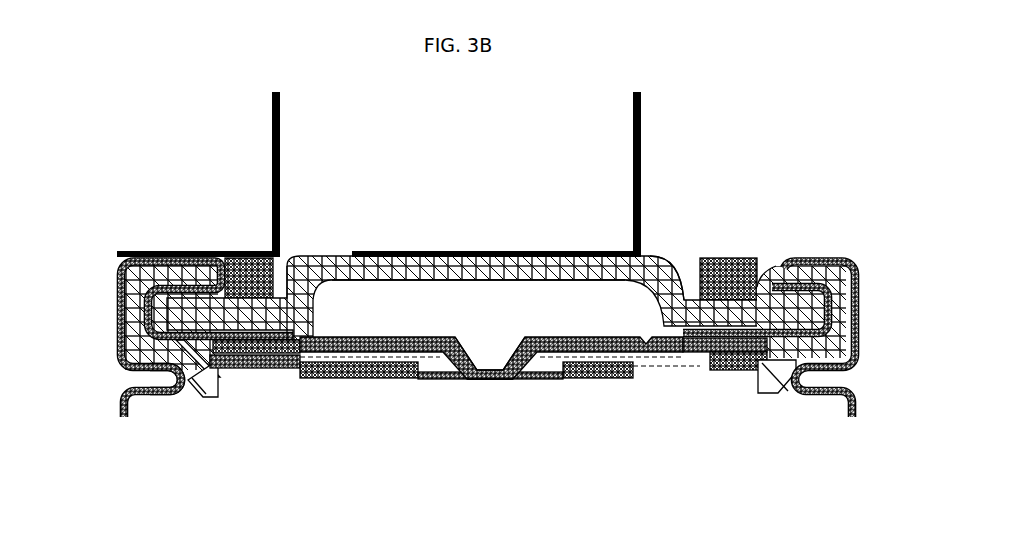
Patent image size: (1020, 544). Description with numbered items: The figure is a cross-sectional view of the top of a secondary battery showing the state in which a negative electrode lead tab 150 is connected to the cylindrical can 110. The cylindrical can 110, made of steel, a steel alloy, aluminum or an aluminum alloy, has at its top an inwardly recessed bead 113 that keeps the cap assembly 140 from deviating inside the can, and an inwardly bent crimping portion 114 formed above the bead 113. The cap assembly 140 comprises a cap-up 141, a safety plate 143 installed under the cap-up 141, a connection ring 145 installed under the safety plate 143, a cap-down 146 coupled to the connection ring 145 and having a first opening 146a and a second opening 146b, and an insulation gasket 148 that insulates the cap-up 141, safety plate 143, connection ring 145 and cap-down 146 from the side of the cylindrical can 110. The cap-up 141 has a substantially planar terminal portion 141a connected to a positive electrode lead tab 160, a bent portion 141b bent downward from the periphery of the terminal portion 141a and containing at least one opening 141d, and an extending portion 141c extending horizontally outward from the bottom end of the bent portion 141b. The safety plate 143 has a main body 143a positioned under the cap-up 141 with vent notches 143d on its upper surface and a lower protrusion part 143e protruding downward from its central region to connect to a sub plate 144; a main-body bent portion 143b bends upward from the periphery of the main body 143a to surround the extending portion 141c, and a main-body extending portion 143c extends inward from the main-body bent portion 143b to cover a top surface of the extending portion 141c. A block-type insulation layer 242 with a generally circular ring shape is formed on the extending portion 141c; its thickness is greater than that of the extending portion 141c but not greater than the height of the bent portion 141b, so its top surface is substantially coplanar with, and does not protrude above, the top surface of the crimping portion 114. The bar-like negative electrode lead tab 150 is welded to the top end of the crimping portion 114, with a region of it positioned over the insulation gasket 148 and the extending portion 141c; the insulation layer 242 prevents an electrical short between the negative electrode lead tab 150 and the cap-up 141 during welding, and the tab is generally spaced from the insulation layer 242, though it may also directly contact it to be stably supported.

The cylindrical can 110 is at (168, 372).
The bead 113 is at (146, 375).
The crimping portion 114 is at (170, 255).
The cap assembly 140 is at (489, 239).
The cap-up 141 is at (489, 239).
The terminal portion 141a is at (530, 253).
The bent portion 141b is at (335, 303).
The extending portion 141c is at (290, 258).
The opening 141d is at (633, 248).
The safety plate 143 is at (577, 387).
The main body 143a is at (702, 342).
The main-body bent portion 143b is at (819, 361).
The main-body extending portion 143c is at (768, 370).
The vent notch 143d is at (645, 353).
The lower protrusion part 143e is at (503, 380).
The sub plate 144 is at (425, 380).
The connection ring 145 is at (247, 355).
The cap-down 146 is at (366, 380).
The first opening 146a is at (463, 380).
The second opening 146b is at (303, 370).
The insulation gasket 148 is at (201, 398).
The negative electrode lead tab 150 is at (281, 110).
The positive electrode lead tab 160 is at (642, 110).
The insulation layer 242 is at (243, 252).